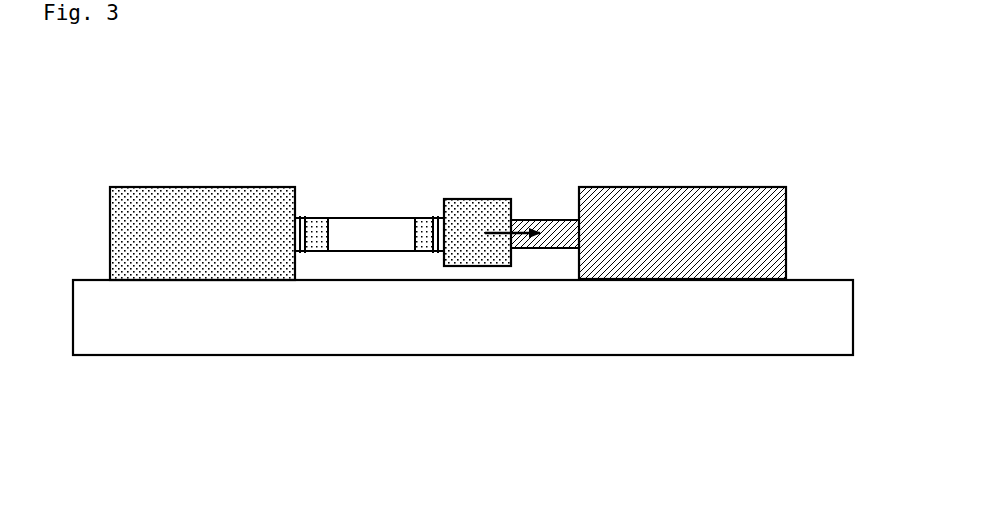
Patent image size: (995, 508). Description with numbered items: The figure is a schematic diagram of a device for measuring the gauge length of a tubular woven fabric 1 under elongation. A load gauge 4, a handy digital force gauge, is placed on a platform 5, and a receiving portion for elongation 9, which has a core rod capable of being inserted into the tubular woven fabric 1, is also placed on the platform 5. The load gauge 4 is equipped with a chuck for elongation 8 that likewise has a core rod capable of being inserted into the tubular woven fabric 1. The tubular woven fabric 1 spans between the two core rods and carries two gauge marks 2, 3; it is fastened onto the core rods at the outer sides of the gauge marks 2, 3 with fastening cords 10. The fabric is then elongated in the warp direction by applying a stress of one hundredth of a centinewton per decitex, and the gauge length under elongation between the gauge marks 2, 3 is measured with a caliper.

The tubular woven fabric 1 is at (371, 215).
The gauge mark 2 is at (327, 215).
The gauge mark 3 is at (415, 215).
The load gauge 4 is at (703, 183).
The platform 5 is at (607, 355).
The chuck for elongation 8 is at (480, 193).
The receiving portion for elongation 9 is at (218, 182).
The fastening cords 10 is at (308, 262).